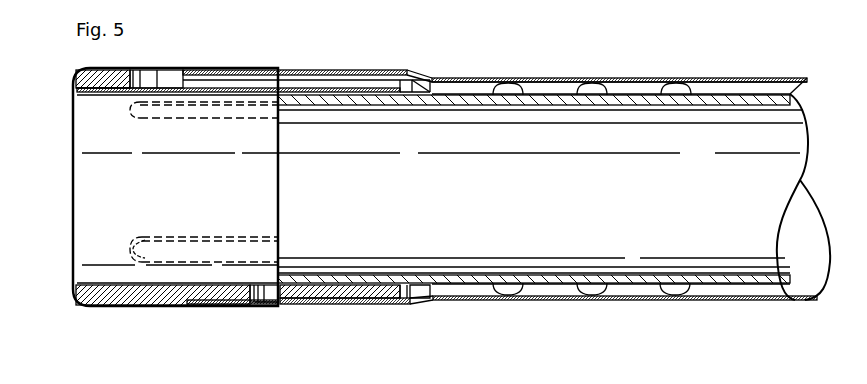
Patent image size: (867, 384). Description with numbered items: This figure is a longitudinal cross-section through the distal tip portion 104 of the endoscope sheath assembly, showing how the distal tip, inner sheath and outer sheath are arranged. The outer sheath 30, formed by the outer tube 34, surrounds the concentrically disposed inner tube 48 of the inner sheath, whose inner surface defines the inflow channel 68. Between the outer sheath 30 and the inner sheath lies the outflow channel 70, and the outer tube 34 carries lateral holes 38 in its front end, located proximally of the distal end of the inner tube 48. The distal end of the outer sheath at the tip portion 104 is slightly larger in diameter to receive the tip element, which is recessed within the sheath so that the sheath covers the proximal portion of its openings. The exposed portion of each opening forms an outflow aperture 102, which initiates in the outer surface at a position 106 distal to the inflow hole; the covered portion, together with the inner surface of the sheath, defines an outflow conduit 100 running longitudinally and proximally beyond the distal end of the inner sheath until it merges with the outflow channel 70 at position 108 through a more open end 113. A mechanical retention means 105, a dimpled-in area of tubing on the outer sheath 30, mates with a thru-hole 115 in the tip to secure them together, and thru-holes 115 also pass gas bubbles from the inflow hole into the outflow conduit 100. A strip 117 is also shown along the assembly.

The outer sheath 30 is at (242, 70).
The outer tube 34 is at (607, 78).
The lateral holes 38 is at (343, 75).
The inner tube 48 is at (292, 285).
The inflow channel 68 is at (597, 208).
The outflow channel 70 is at (632, 88).
The outflow conduit 100 is at (203, 108).
The outflow aperture 102 is at (137, 78).
The distal tip portion 104 is at (430, 308).
The mechanical retention means 105 is at (263, 298).
The initiation position 106 is at (143, 237).
The merging position 108 is at (418, 86).
The open end 113 is at (398, 83).
The thru-hole 115 is at (260, 307).
The seal strip 117 is at (222, 87).